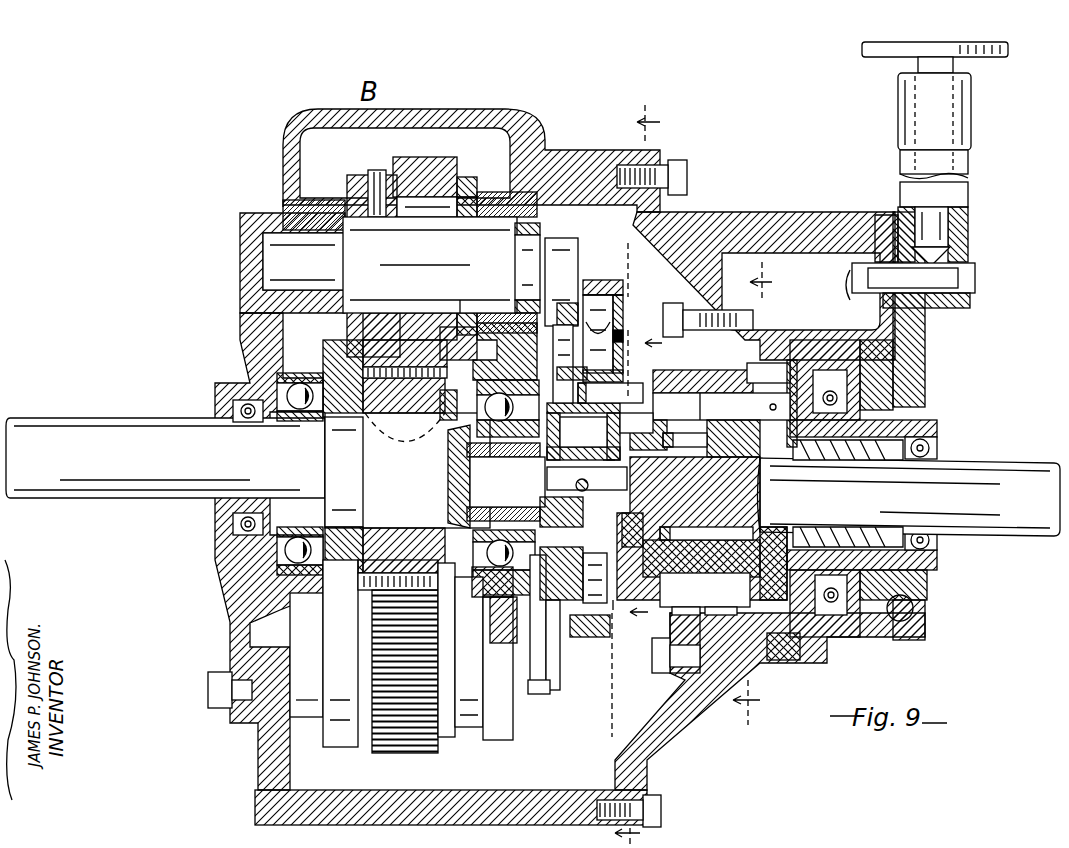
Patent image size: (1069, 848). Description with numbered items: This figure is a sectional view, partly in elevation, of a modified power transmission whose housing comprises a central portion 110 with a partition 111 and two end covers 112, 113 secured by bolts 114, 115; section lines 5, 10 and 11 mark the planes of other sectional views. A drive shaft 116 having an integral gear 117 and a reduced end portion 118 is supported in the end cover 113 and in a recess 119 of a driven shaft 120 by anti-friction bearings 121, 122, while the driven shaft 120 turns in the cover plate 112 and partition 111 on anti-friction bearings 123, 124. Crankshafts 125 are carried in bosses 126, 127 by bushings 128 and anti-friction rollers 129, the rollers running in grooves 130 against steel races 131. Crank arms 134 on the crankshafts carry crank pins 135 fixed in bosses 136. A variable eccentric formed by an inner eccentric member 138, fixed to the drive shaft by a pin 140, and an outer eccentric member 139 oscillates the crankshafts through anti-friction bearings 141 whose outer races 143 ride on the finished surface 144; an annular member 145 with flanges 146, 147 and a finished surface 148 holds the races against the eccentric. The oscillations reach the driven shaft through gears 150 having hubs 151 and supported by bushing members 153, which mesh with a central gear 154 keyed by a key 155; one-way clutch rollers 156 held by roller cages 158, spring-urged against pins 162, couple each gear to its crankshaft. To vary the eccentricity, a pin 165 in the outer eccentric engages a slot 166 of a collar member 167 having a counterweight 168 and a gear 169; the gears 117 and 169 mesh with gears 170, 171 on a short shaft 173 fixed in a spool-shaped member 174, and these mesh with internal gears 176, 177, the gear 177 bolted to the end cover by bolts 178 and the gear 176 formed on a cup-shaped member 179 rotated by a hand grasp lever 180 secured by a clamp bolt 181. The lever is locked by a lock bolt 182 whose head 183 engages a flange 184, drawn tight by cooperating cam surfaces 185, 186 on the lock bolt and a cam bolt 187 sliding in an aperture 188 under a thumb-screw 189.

The section line 5- 5 is at (642, 490).
The section line 10- 10 is at (638, 463).
The section line 11- 11 is at (761, 493).
The central portion 110 is at (486, 122).
The partition 111 is at (540, 216).
The end cover 112 is at (240, 262).
The end cover 113 is at (718, 217).
The bolt 114 is at (208, 689).
The bolt 115 is at (690, 169).
The drive shaft 116 is at (985, 470).
The gear 117 is at (768, 472).
The reduced end portion 118 is at (505, 482).
The recess 119 is at (455, 473).
The driven shaft 120 is at (130, 422).
The anti-friction bearing 121 is at (853, 465).
The anti-friction bearing 122 is at (482, 505).
The anti-friction bearing 123 is at (316, 395).
The anti-friction bearing 124 is at (486, 404).
The crankshaft 125 is at (430, 265).
The boss 126 is at (328, 202).
The boss 127 is at (492, 205).
The bushing 128 is at (322, 241).
The anti-friction roller 129 is at (522, 236).
The groove 130 is at (518, 277).
The steel race 131 is at (480, 226).
The crank arm 134 is at (575, 270).
The crank pin 135 is at (626, 337).
The boss 136 is at (575, 578).
The inner eccentric member 138 is at (587, 477).
The outer eccentric member 139 is at (583, 432).
The pin 140 is at (588, 485).
The anti-friction bearing 141 is at (572, 366).
The outer race 143 is at (612, 321).
The finished surface 144 is at (561, 548).
The annular member 145 is at (590, 637).
The flange 146 is at (600, 274).
The flange 147 is at (618, 311).
The surface 148 is at (620, 298).
The gear 150 is at (420, 167).
The hub 151 is at (465, 177).
The bushing member 153 is at (460, 300).
The central gear 154 is at (385, 540).
The key 155 is at (405, 428).
The roller 156 is at (415, 215).
The roller cage 158 is at (360, 222).
The pin 162 is at (375, 170).
The pin 165 is at (626, 382).
The slot 166 is at (626, 402).
The collar member 167 is at (610, 461).
The counterweight 168 is at (613, 612).
The gear 169 is at (690, 447).
The gear 170 is at (721, 406).
The gear 171 is at (682, 406).
The short shaft 173 is at (762, 392).
The spool-shaped member 174 is at (713, 552).
The internal gear 176 is at (720, 580).
The internal gear 177 is at (677, 582).
The bolt 178 is at (668, 305).
The cup-shaped member 179 is at (942, 425).
The hand grasp lever 180 is at (928, 350).
The clamp bolt 181 is at (915, 608).
The lock bolt 182 is at (970, 279).
The head 183 is at (852, 286).
The flange 184 is at (878, 247).
The cam surface 185 is at (950, 308).
The cam surface 186 is at (960, 251).
The cam bolt 187 is at (964, 217).
The aperture 188 is at (973, 119).
The thumb-screw 189 is at (992, 58).